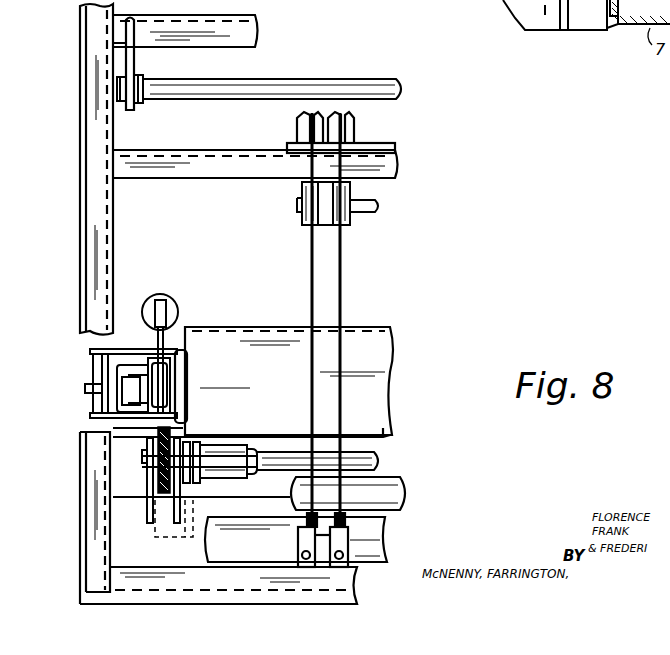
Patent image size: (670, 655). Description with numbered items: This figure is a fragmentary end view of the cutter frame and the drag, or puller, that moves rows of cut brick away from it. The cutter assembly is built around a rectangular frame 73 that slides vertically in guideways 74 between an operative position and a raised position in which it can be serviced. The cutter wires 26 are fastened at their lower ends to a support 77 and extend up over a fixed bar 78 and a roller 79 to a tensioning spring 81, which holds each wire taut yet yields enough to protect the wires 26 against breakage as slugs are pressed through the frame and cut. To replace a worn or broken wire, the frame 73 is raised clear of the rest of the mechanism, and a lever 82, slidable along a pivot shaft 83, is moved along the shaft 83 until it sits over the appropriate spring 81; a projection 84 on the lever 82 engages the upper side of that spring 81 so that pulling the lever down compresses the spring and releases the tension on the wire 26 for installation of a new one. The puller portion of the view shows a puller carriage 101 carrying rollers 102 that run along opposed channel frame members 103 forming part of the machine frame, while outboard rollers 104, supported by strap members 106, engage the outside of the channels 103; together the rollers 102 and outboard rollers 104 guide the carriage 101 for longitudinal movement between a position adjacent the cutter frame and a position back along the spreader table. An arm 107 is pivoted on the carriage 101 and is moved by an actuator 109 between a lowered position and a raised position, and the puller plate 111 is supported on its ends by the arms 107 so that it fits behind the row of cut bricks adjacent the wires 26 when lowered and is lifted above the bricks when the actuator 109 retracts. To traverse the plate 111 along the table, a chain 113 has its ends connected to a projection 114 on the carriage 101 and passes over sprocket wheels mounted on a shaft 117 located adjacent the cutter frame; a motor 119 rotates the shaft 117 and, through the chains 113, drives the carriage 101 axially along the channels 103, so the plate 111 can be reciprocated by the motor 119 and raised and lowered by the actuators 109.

The cutter wires 26 is at (311, 277).
The rectangular frame 73 is at (250, 36).
The guideways 74 is at (108, 225).
The support 77 is at (300, 542).
The fixed bar 78 is at (400, 492).
The roller 79 is at (302, 226).
The tensioning spring 81 is at (300, 126).
The lever 82 is at (134, 58).
The pivot shaft 83 is at (257, 87).
The projection 84 is at (131, 104).
The puller carriage 101 is at (190, 372).
The rollers 102 is at (92, 376).
The channel frame members 103 is at (121, 414).
The outboard rollers 104 is at (85, 388).
The strap members 106 is at (90, 351).
The arm 107 is at (184, 350).
The actuator 109 is at (148, 301).
The puller plate 111 is at (280, 317).
The chain 113 is at (153, 495).
The projection 114 is at (186, 420).
The shaft 117 is at (288, 440).
The motor 119 is at (218, 482).